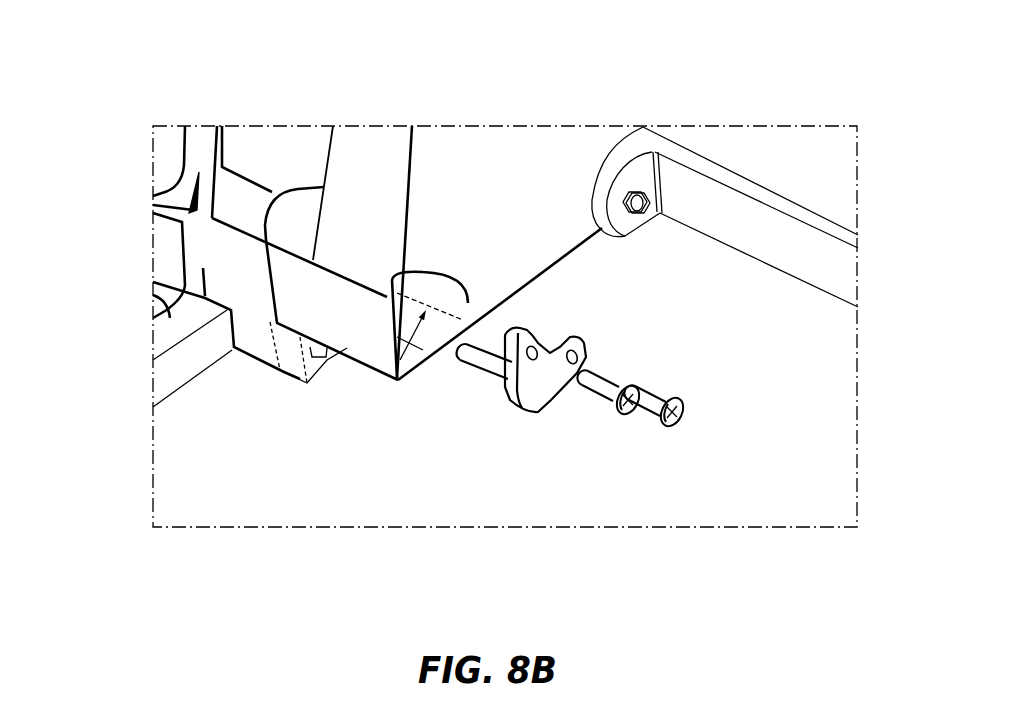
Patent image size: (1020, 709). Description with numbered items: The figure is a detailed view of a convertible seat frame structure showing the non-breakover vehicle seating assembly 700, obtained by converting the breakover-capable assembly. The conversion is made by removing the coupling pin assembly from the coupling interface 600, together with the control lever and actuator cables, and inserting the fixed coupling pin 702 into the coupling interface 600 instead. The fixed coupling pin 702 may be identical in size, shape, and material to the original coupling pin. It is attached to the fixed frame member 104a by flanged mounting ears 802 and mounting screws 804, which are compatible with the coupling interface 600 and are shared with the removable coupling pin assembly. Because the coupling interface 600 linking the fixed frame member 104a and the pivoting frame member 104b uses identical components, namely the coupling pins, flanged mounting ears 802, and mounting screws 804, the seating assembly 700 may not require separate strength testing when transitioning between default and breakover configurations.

The non-breakover vehicle seating assembly 700 is at (462, 275).
The pivoting frame member 104b is at (282, 199).
The fixed frame member 104a is at (261, 405).
The coupling interface 600 is at (433, 389).
The fixed coupling pin 702 is at (456, 468).
The flanged mounting ears 802 is at (549, 460).
The mounting screws 804 is at (653, 481).